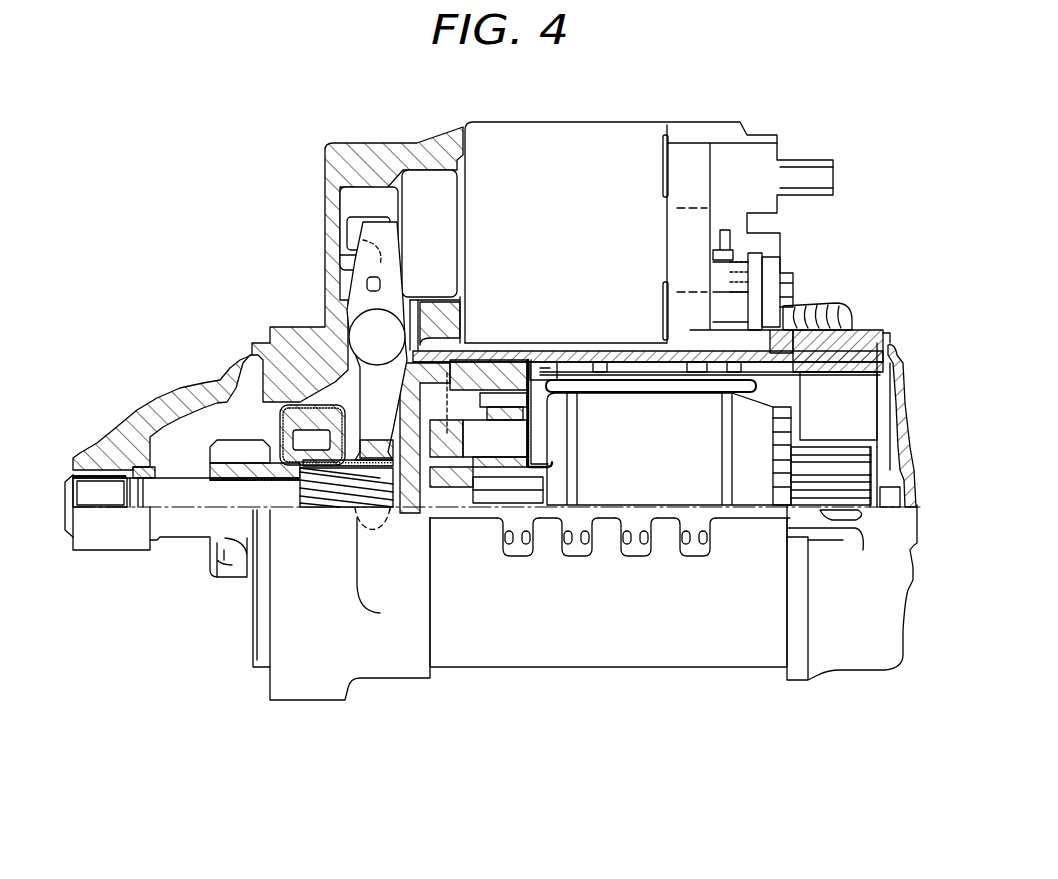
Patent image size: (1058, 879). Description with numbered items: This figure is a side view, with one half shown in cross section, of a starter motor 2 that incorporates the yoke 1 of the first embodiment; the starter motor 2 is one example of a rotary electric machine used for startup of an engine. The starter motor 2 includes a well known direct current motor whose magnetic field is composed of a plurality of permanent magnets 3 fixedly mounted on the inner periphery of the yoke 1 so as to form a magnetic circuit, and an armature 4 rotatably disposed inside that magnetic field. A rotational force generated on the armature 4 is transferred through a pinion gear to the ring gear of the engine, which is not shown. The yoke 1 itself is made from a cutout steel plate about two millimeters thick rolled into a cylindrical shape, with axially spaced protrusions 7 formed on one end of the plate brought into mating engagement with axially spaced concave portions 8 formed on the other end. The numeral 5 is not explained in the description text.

The yoke 1 is at (745, 622).
The starter motor 2 is at (466, 675).
The permanent magnets 3 is at (680, 380).
The armature 4 is at (617, 487).
The bearing cover 5 is at (228, 567).
The protrusions 7 is at (513, 550).
The concave portions 8 is at (530, 553).